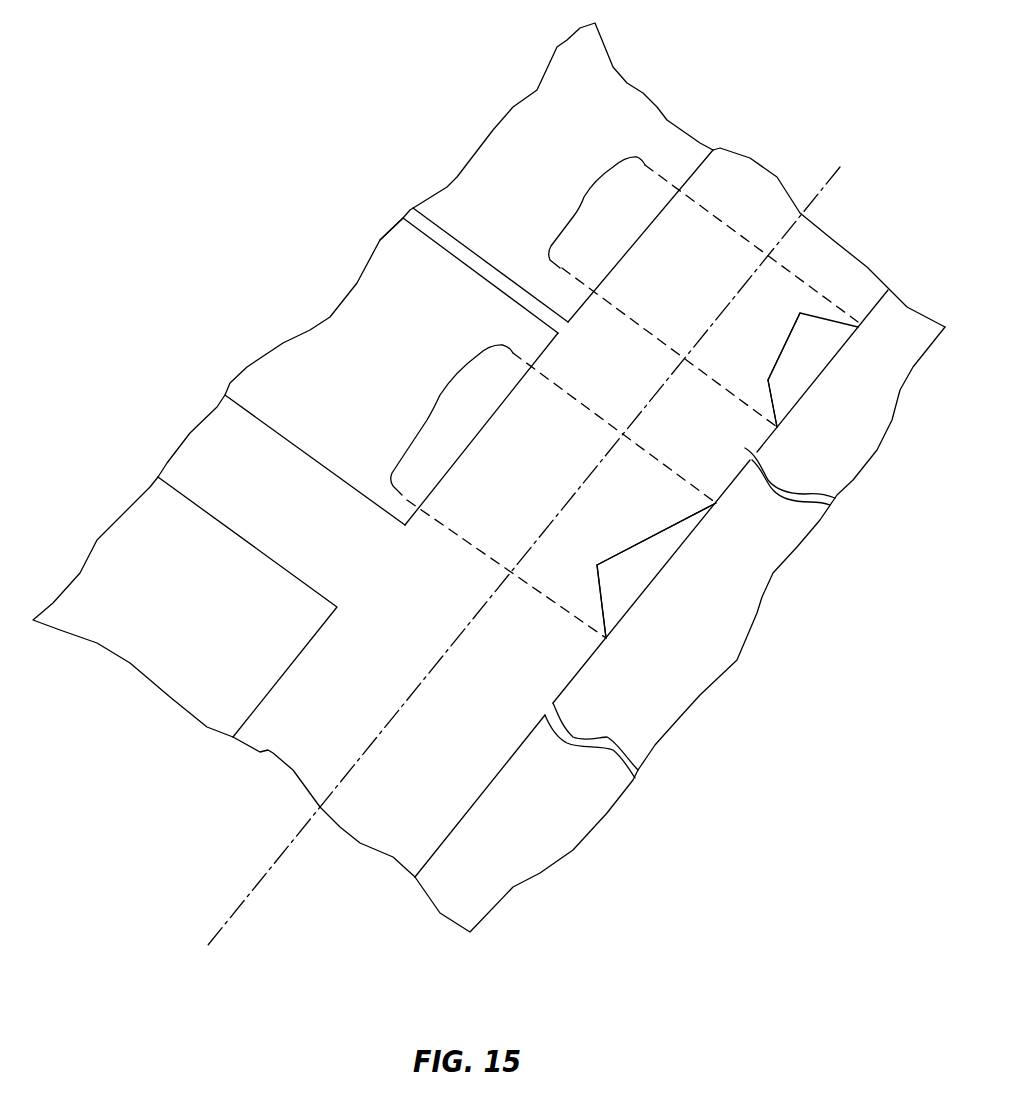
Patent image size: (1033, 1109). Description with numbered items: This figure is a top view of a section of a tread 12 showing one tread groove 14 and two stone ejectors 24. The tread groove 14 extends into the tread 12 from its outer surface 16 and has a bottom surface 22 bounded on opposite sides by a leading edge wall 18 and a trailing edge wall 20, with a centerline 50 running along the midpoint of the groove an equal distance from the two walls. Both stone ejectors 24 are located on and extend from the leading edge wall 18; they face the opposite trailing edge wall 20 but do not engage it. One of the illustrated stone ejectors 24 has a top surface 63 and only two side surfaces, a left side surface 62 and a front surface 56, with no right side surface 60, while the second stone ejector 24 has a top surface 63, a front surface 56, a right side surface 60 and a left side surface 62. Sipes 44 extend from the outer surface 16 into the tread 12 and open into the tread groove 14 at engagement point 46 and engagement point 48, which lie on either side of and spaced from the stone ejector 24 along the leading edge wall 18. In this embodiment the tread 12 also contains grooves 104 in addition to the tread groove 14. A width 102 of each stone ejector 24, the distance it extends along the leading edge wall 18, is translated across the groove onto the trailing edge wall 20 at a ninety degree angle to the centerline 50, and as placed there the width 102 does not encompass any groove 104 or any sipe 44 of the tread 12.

The tread 12 is at (607, 97).
The tread groove 14 is at (313, 750).
The outer surface 16 is at (777, 543).
The leading edge wall 18 is at (457, 822).
The trailing edge wall 20 is at (303, 655).
The bottom surface 22 is at (738, 190).
The stone ejector 24 is at (620, 590).
The sipe 44 is at (448, 238).
The engagement point 46 is at (745, 448).
The engagement point 48 is at (550, 708).
The centerline 50 is at (270, 873).
The front surface 56 is at (783, 347).
The right side surface 60 is at (818, 317).
The left side surface 62 is at (770, 402).
The top surface 63 is at (805, 343).
The width 102 is at (582, 200).
The groove 104 is at (265, 453).